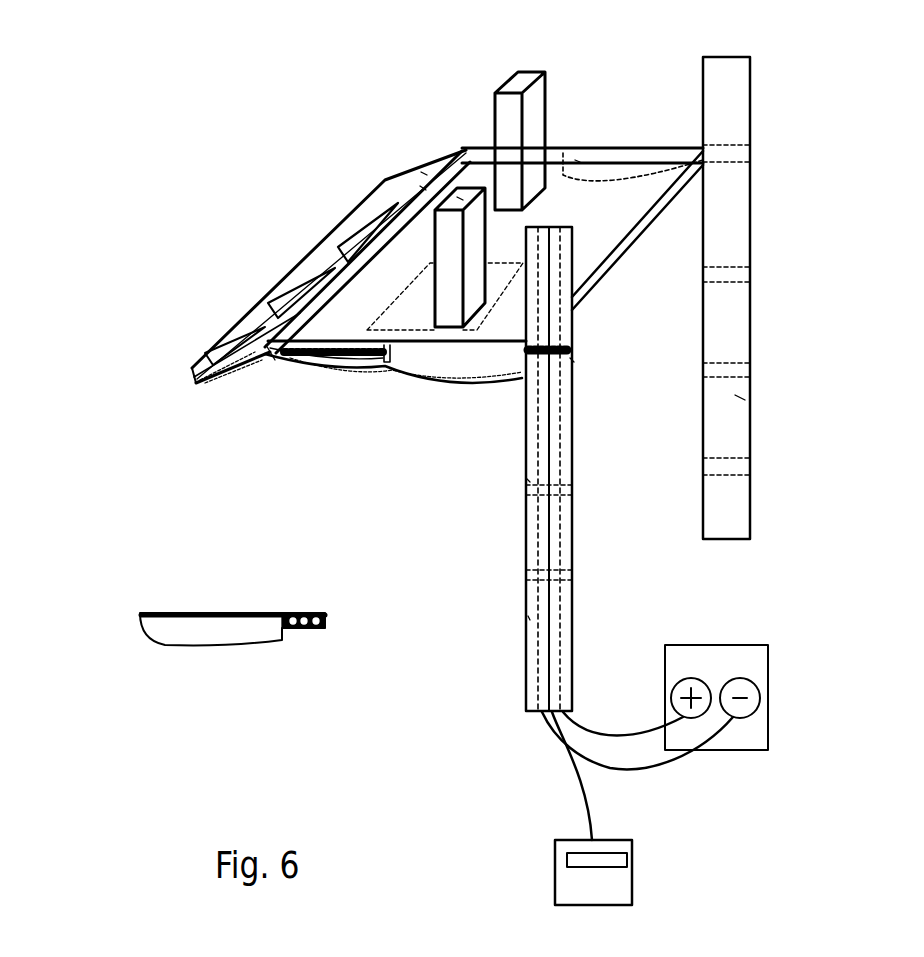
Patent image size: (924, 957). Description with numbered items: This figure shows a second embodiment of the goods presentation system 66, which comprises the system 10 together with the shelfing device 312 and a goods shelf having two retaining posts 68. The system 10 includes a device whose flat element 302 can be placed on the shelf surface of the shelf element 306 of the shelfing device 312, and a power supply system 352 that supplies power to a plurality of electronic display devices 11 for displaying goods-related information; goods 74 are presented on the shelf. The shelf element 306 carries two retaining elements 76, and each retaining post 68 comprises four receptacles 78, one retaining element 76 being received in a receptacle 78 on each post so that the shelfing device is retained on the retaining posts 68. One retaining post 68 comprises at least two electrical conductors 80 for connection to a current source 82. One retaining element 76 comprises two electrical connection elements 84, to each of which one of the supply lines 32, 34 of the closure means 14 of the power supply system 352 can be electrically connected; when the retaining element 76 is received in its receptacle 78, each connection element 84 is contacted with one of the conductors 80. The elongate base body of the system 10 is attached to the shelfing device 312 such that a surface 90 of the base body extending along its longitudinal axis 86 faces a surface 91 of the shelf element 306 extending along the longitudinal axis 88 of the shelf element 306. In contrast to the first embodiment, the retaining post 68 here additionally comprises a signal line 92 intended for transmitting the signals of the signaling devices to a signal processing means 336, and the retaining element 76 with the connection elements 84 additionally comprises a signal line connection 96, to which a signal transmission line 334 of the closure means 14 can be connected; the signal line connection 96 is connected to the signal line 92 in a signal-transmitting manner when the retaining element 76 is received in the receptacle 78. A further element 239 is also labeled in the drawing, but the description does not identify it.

The system 10 is at (225, 310).
The display device 11 is at (355, 228).
The closure means 14 is at (193, 380).
The supply line 32 is at (313, 362).
The supply line 34 is at (370, 362).
The goods presentation system 66 is at (783, 595).
The retaining post 68 is at (757, 325).
The goods 74 is at (420, 207).
The retaining element 76 is at (613, 173).
The receptacle 78 is at (750, 148).
The conductor 80 is at (528, 618).
The current source 82 is at (745, 735).
The connection element 84 is at (548, 340).
The longitudinal axis of the base body 86 is at (458, 197).
The longitudinal axis of the shelf element 88 is at (577, 160).
The surface 90 is at (424, 172).
The surface 91 is at (422, 187).
The signal line of the retaining post 92 is at (526, 480).
The signal line connection 96 is at (572, 362).
The post section 239 is at (740, 397).
The flat element 302 is at (412, 308).
The shelf element 306 is at (645, 213).
The shelfing device 312 is at (283, 362).
The signal transmission line 334 is at (447, 382).
The signal processing means 336 is at (622, 870).
The power supply system 352 is at (233, 335).